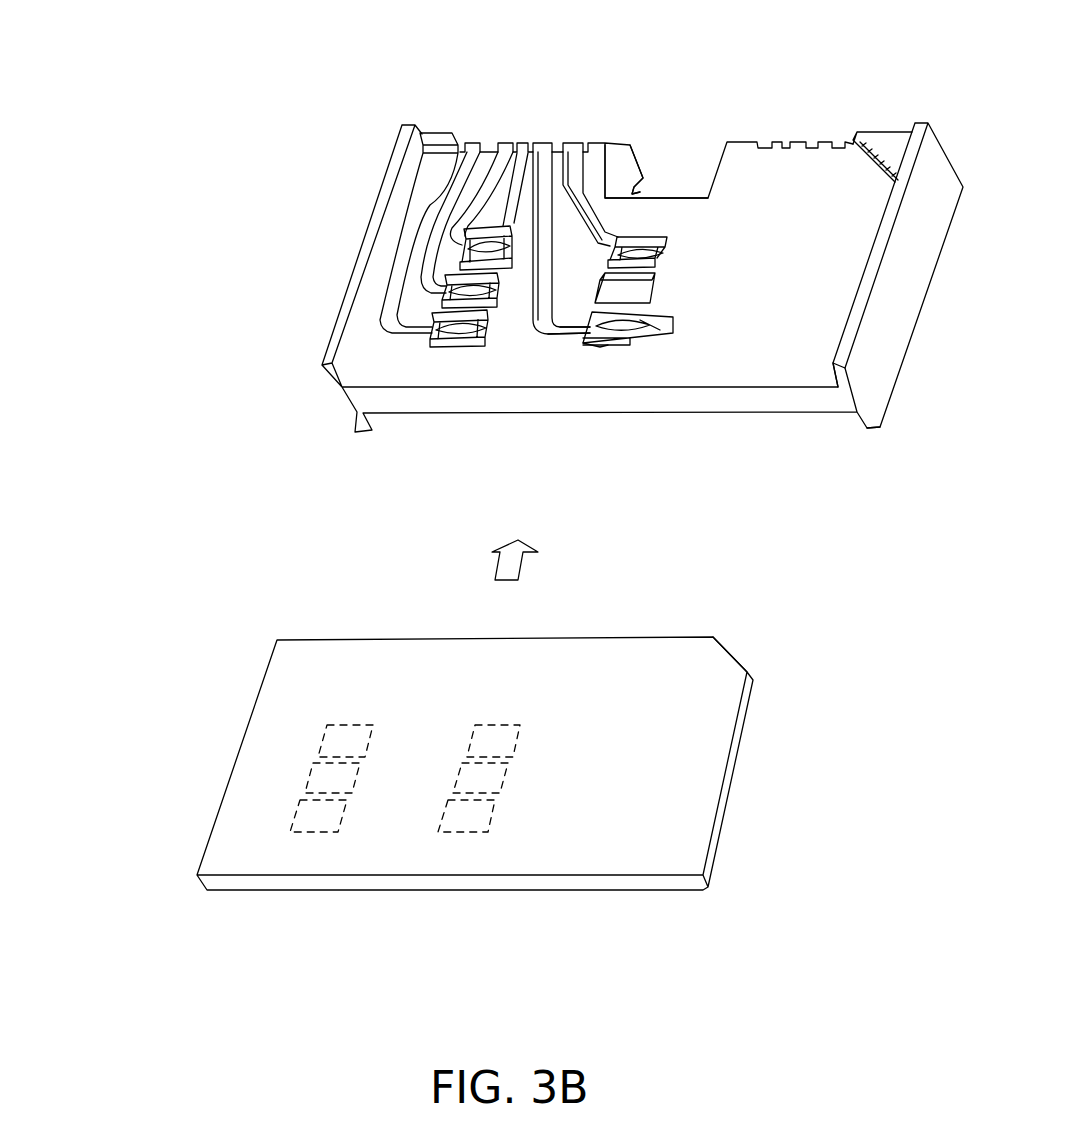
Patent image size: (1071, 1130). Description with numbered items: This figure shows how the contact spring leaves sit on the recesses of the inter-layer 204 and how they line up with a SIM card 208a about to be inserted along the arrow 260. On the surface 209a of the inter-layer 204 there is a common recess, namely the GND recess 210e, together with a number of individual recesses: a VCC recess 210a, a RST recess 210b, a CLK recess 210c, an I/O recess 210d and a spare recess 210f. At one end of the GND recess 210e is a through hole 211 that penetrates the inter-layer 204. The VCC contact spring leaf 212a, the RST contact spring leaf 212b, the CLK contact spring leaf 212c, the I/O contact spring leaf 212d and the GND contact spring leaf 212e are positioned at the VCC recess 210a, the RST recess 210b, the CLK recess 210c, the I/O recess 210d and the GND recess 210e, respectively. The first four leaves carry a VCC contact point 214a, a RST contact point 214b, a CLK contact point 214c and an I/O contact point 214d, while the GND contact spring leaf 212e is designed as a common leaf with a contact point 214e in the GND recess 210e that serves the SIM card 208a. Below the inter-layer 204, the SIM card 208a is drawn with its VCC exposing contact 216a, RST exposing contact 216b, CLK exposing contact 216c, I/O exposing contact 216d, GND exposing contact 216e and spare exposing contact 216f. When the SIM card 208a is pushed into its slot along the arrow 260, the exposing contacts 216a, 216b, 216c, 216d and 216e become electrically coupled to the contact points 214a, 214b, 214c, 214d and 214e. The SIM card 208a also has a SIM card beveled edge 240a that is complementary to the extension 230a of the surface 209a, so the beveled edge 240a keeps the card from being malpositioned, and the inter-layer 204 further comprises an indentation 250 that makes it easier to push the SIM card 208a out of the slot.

The inter-layer 204 is at (873, 347).
The SIM card 208a is at (687, 783).
The surface 209a is at (723, 363).
The VCC recess 210a is at (457, 358).
The RST recess 210b is at (457, 300).
The CLK recess 210c is at (460, 258).
The I/O recess 210d is at (677, 257).
The GND recess 210e is at (560, 347).
The spare recess 210f is at (662, 298).
The through hole 211 is at (613, 346).
The VCC contact spring leaf 212a is at (462, 143).
The RST contact spring leaf 212b is at (500, 148).
The CLK contact spring leaf 212c is at (528, 148).
The I/O contact spring leaf 212d is at (588, 150).
The GND contact spring leaf 212e is at (565, 150).
The VCC contact point 214a is at (479, 352).
The RST contact point 214b is at (447, 287).
The CLK contact point 214c is at (455, 235).
The I/O contact point 214d is at (675, 246).
The GND contact point 214e is at (661, 323).
The VCC exposing contact 216a is at (295, 817).
The RST exposing contact 216b is at (312, 775).
The CLK exposing contact 216c is at (323, 740).
The I/O exposing contact 216d is at (515, 742).
The GND exposing contact 216e is at (497, 817).
The spare exposing contact 216f is at (495, 775).
The extension 230a is at (878, 147).
The SIM card beveled edge 240a is at (735, 655).
The indentation 250 is at (675, 190).
The arrow 260 is at (500, 562).